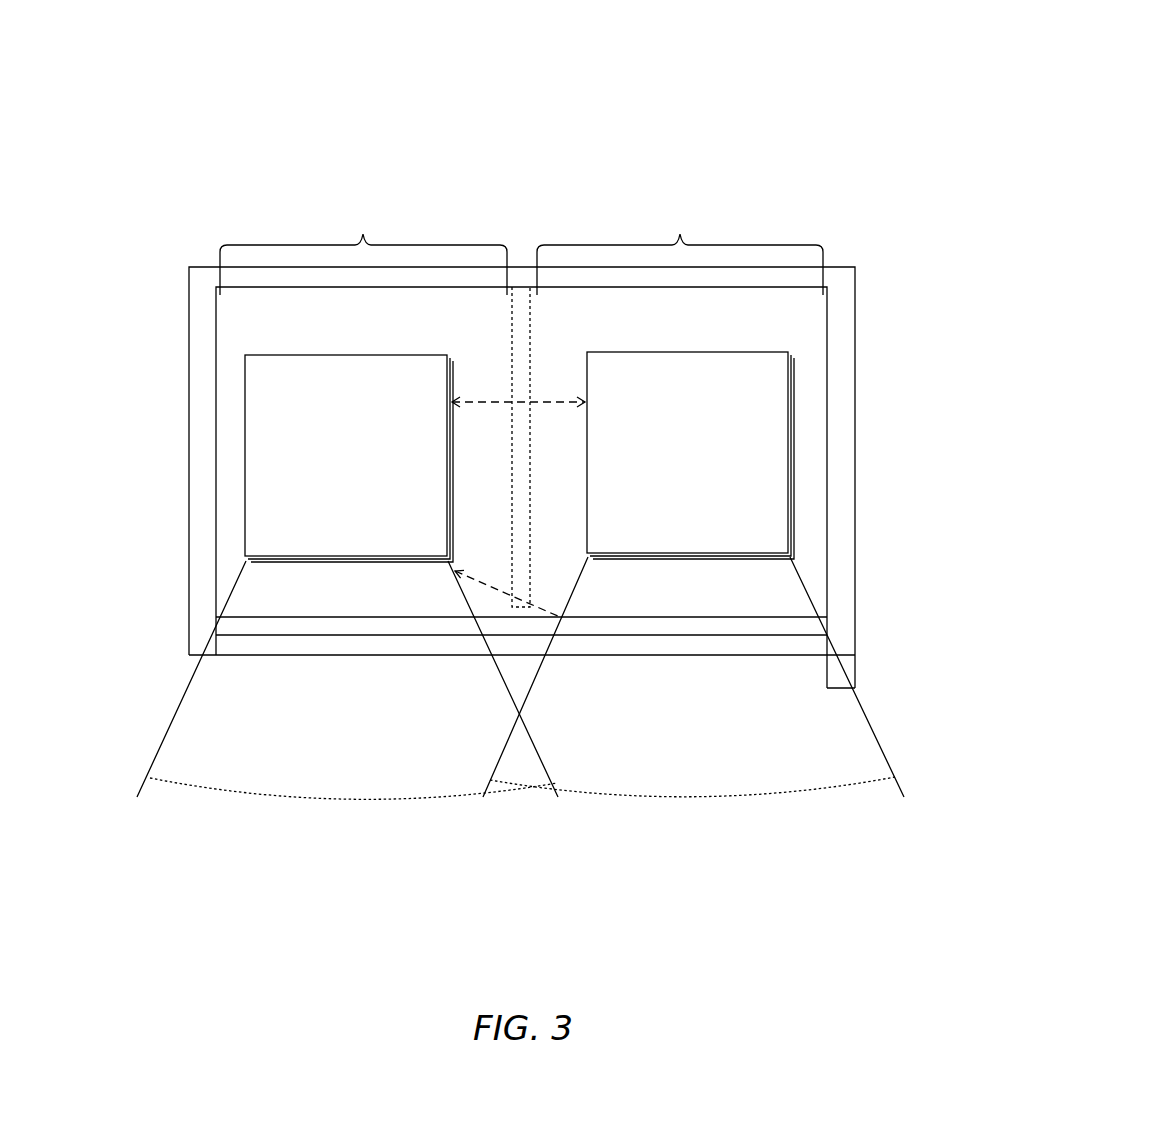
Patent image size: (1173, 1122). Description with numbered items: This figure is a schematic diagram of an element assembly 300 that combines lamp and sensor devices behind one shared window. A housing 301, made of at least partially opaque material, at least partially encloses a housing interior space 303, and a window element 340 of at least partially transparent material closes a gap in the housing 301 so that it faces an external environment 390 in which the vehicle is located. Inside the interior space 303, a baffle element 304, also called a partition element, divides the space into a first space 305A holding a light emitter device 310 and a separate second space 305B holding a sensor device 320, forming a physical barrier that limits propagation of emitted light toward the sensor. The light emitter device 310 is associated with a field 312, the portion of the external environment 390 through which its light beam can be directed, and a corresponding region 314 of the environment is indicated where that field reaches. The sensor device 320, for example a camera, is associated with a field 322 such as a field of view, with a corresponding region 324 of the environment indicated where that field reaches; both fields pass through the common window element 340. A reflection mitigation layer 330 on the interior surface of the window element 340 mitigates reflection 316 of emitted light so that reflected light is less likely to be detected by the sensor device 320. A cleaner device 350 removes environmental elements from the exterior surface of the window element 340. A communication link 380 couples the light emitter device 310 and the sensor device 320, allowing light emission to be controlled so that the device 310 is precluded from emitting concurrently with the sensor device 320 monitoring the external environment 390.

The element assembly 300 is at (717, 146).
The housing 301 is at (845, 266).
The housing interior space 303 is at (803, 327).
The baffle element 304 is at (522, 293).
The first space 305A is at (363, 251).
The second space 305B is at (680, 252).
The light emitter device 310 is at (704, 466).
The field 312 is at (869, 711).
The first camera focal surface 314 is at (850, 788).
The reflection 316 is at (494, 583).
The sensor device 320 is at (362, 467).
The field 322 is at (192, 672).
The second camera focal surface 324 is at (407, 803).
The reflection mitigation layer 330 is at (809, 623).
The window element 340 is at (809, 646).
The cleaner device 350 is at (853, 668).
The communication link 380 is at (541, 398).
The external environment 390 is at (555, 859).